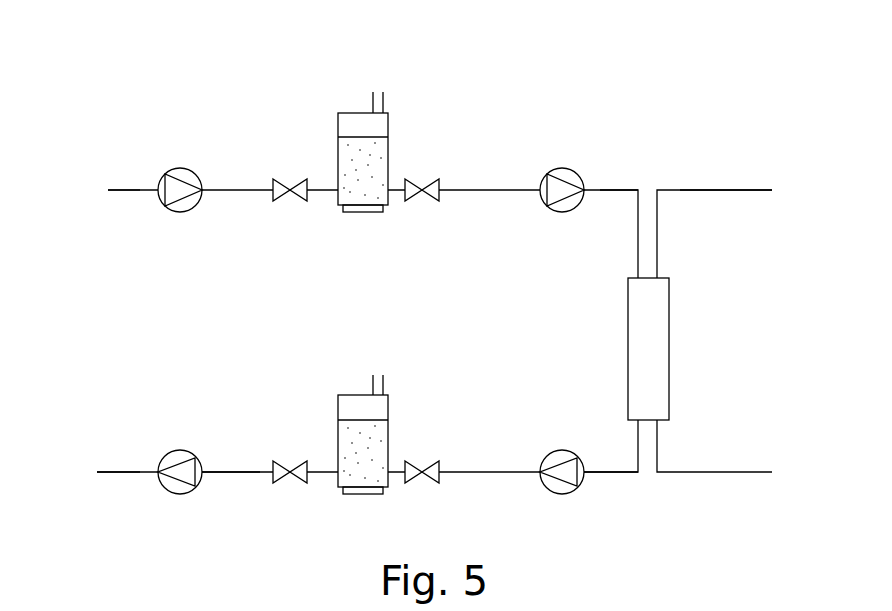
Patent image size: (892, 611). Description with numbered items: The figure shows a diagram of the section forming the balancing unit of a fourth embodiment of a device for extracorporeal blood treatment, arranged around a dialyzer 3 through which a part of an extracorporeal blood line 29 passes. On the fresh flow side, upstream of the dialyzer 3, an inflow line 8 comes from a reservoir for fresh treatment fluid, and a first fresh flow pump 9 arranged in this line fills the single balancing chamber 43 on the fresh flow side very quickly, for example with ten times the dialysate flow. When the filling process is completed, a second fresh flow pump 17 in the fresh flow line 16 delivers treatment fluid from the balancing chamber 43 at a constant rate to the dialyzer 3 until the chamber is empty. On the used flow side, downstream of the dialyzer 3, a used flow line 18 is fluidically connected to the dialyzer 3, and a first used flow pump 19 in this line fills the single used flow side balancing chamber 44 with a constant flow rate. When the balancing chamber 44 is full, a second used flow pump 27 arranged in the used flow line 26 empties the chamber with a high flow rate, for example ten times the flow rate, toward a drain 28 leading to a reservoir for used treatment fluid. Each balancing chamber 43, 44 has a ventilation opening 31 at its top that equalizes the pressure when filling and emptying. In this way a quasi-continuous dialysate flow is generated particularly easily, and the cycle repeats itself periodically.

The dialyzer 3 is at (668, 352).
The inflow line 8 is at (123, 190).
The first fresh flow pump 9 is at (178, 168).
The fresh flow line 16 is at (623, 190).
The second fresh flow pump 17 is at (562, 168).
The used flow line 18 is at (612, 474).
The first used flow pump 19 is at (557, 487).
The used flow line 26 is at (232, 472).
The second used flow pump 27 is at (178, 488).
The drain 28 is at (116, 472).
The extracorporeal blood line 29 is at (731, 190).
The ventilation opening 31 is at (380, 92).
The balancing chamber on the fresh flow side 43 is at (388, 145).
The used flow side balancing chamber 44 is at (373, 435).